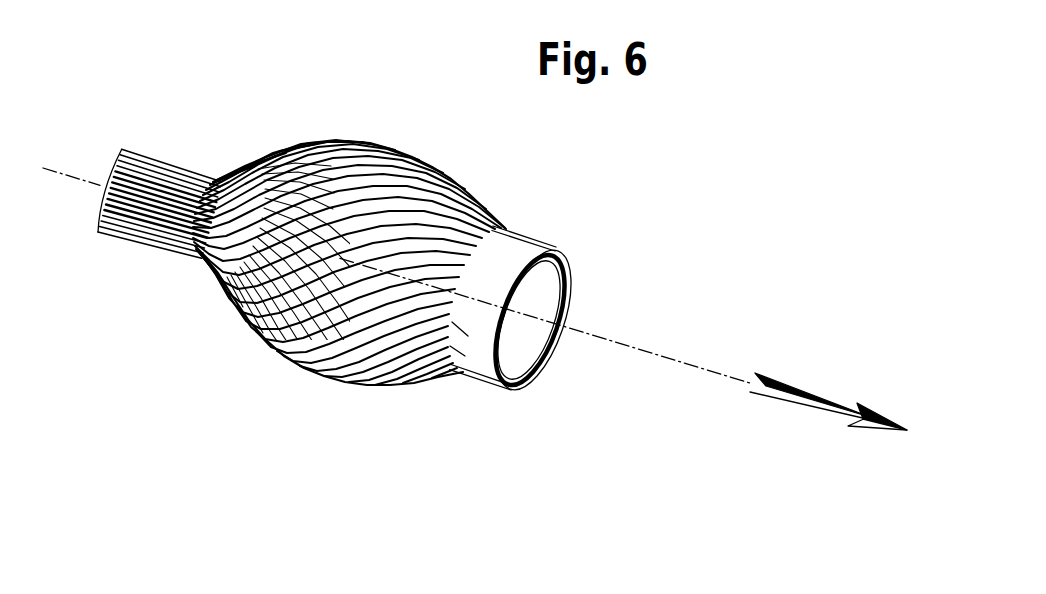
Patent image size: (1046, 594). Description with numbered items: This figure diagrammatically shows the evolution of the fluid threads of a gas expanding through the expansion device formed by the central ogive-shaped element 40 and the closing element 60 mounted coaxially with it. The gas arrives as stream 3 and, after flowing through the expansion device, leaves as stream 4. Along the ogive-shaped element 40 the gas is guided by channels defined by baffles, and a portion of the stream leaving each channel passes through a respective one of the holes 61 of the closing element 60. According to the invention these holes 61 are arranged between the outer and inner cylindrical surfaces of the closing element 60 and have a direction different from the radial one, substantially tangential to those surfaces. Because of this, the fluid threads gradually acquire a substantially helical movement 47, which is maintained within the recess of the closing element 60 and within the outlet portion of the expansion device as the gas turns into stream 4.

The stream 3 is at (152, 169).
The ogive-shaped element 40 is at (302, 280).
The helical movement 47 is at (293, 362).
The closing element 60 is at (523, 251).
The holes 61 is at (486, 277).
The stream 4 is at (797, 390).